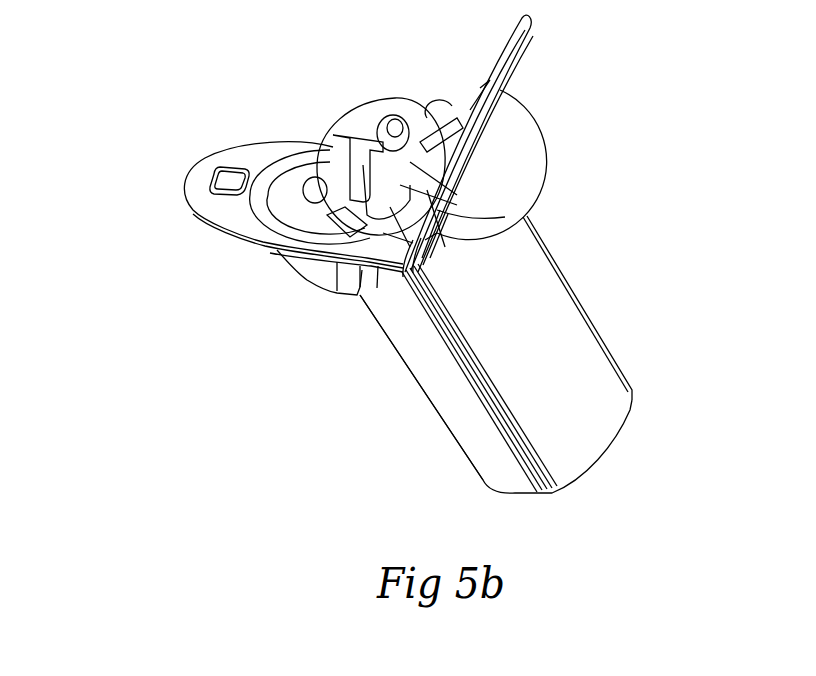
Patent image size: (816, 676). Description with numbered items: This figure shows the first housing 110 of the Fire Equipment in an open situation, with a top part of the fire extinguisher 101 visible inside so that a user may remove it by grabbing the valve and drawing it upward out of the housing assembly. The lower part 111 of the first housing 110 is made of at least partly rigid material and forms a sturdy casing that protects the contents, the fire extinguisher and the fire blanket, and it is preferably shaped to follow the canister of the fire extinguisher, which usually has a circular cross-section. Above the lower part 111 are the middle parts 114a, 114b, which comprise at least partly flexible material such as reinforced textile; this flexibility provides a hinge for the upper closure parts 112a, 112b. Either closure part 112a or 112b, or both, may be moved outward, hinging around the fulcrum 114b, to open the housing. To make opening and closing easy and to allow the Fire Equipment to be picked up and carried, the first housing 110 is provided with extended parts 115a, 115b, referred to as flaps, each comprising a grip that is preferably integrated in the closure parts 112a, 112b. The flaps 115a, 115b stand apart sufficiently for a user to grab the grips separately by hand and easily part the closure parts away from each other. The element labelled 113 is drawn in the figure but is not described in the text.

The fire extinguisher 101 is at (350, 166).
The first housing 110 is at (598, 299).
The lower part 111 is at (413, 380).
The closure part 112a is at (293, 277).
The closure part 112b is at (537, 145).
The bracket 113 is at (435, 248).
The middle part 114a is at (377, 277).
The middle part 114b is at (400, 277).
The extended part 115a is at (190, 167).
The extended part 115b is at (522, 50).